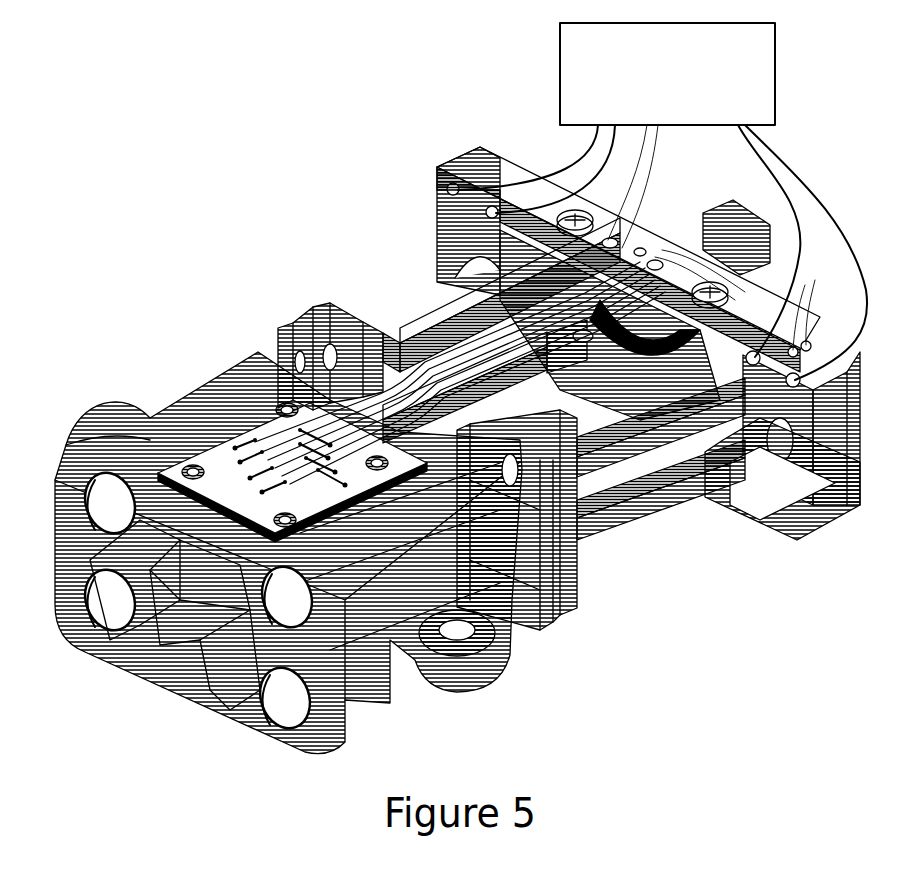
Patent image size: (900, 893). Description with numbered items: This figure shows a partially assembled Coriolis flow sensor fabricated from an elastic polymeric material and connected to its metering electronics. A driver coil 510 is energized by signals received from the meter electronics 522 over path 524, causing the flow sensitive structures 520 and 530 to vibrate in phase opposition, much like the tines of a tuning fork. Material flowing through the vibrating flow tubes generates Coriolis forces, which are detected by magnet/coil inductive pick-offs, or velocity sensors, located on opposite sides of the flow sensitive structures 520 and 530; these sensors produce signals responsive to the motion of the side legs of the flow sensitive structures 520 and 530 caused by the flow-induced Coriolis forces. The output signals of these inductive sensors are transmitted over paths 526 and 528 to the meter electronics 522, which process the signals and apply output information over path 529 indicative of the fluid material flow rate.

The driver coil 510 is at (768, 300).
The flow sensitive structure 520 is at (603, 426).
The meter electronics 522 is at (667, 74).
The path 524 is at (711, 237).
The path 526 is at (536, 169).
The path 528 is at (802, 252).
The path 529 is at (560, 70).
The flow sensitive structure 530 is at (649, 486).